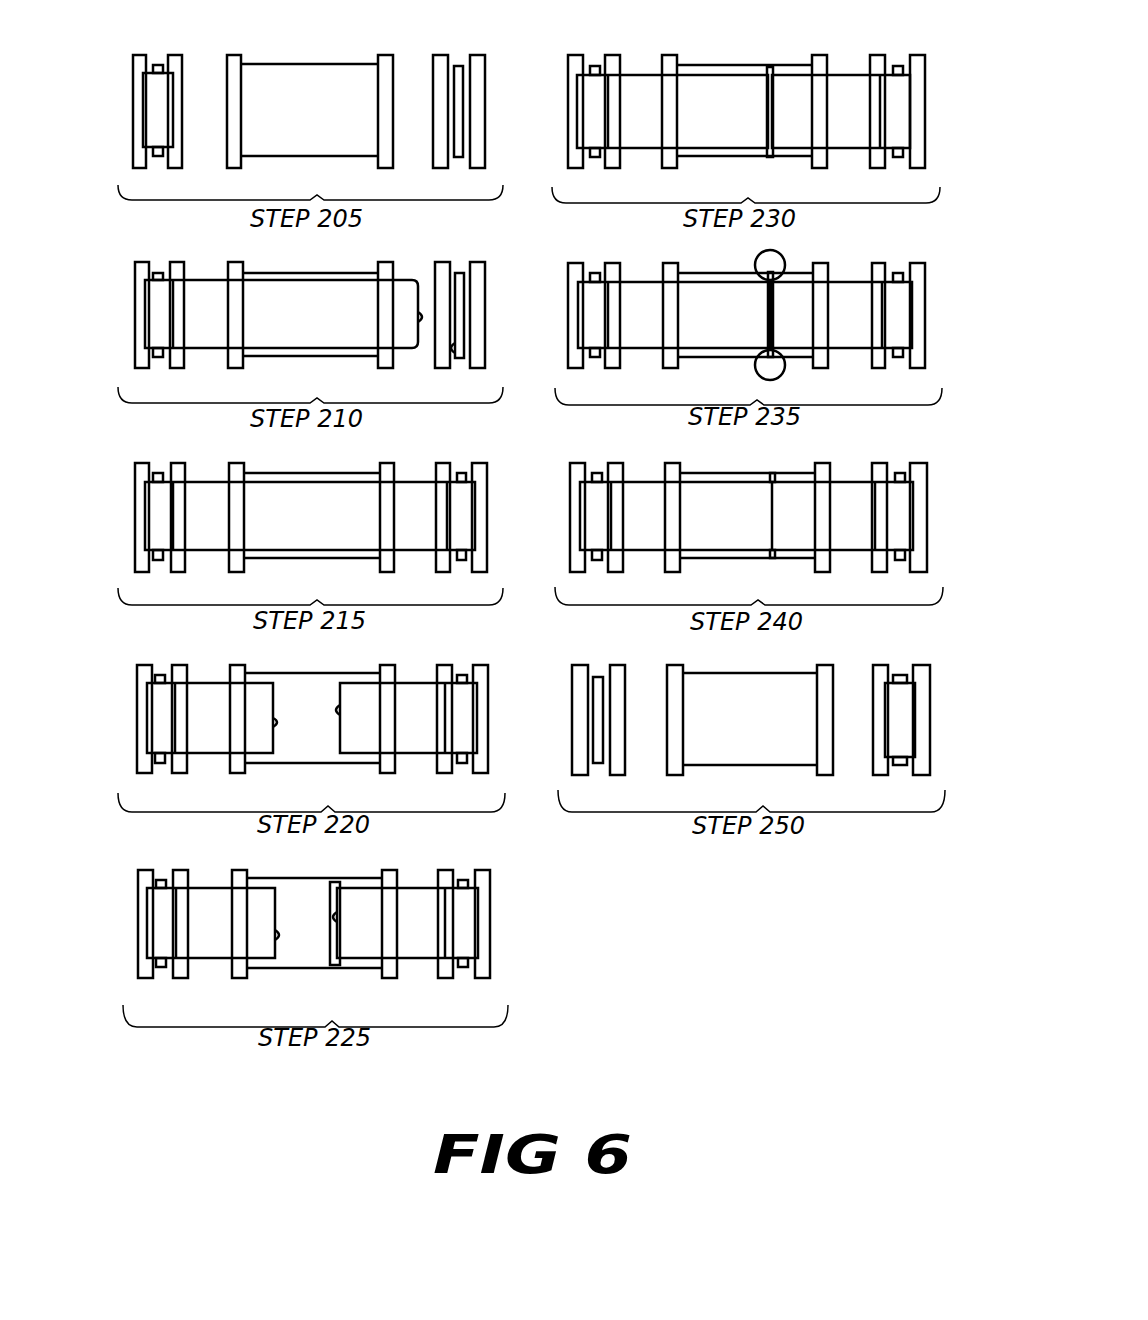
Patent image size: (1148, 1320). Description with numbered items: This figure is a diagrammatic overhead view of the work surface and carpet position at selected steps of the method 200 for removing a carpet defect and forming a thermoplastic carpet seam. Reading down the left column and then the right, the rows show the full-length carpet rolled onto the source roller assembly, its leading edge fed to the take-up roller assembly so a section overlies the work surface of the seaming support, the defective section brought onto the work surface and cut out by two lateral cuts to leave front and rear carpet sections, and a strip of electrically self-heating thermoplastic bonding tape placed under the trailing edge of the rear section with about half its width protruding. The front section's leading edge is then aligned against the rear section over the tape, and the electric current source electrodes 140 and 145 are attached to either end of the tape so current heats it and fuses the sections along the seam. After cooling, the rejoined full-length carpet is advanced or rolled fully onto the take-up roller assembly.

The electric current source electrode 140 is at (785, 375).
The electric current source electrode 145 is at (780, 253).
The method 200 is at (672, 915).